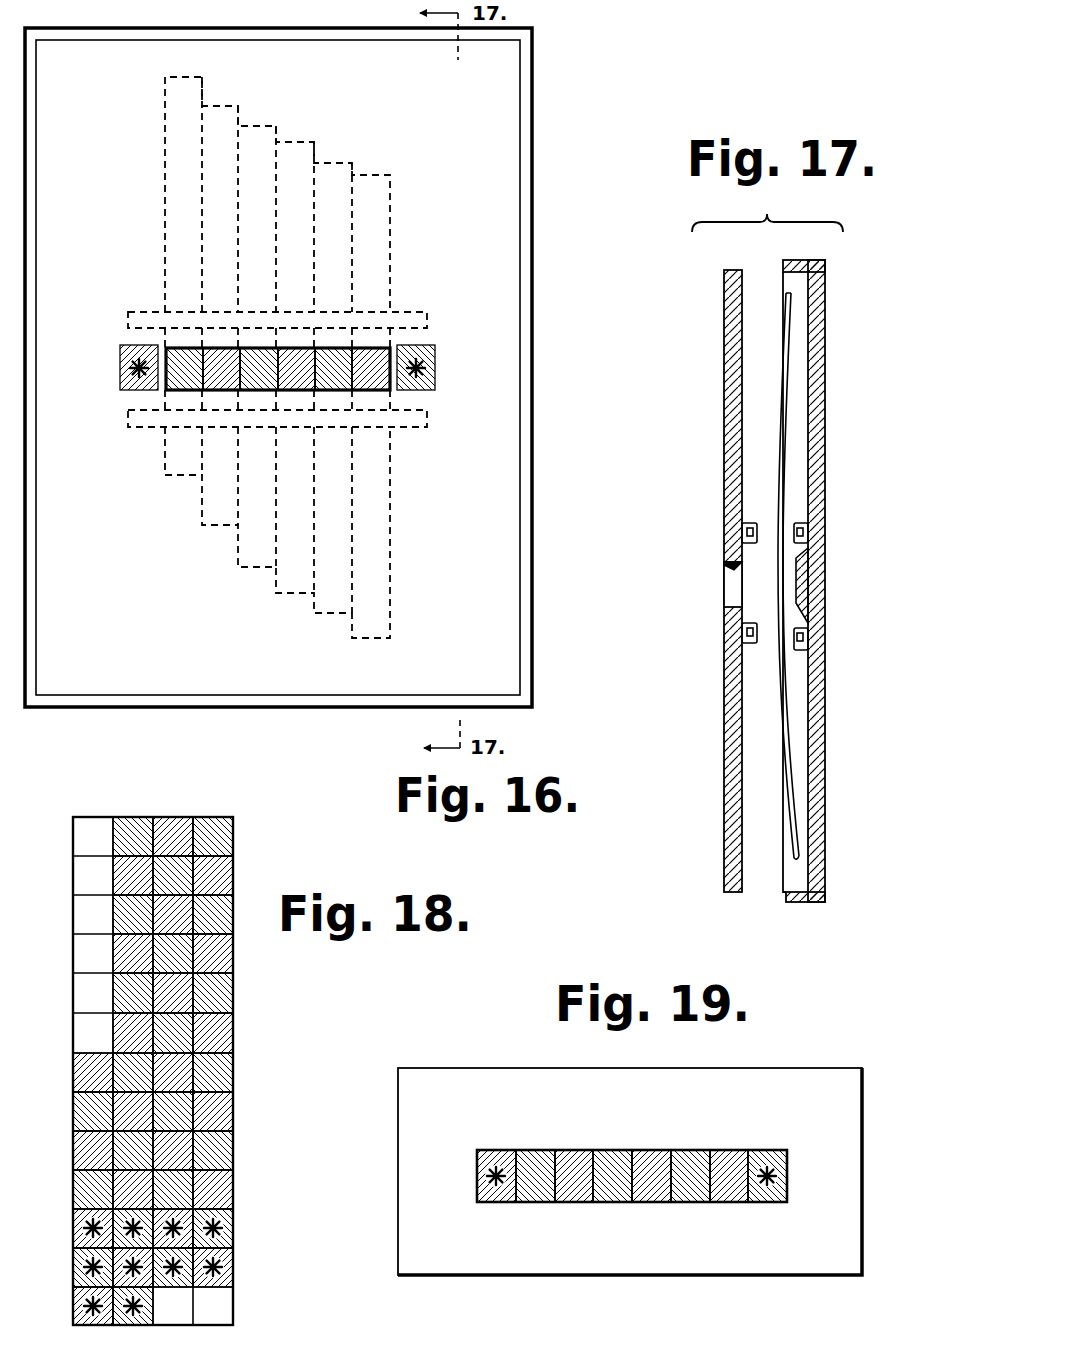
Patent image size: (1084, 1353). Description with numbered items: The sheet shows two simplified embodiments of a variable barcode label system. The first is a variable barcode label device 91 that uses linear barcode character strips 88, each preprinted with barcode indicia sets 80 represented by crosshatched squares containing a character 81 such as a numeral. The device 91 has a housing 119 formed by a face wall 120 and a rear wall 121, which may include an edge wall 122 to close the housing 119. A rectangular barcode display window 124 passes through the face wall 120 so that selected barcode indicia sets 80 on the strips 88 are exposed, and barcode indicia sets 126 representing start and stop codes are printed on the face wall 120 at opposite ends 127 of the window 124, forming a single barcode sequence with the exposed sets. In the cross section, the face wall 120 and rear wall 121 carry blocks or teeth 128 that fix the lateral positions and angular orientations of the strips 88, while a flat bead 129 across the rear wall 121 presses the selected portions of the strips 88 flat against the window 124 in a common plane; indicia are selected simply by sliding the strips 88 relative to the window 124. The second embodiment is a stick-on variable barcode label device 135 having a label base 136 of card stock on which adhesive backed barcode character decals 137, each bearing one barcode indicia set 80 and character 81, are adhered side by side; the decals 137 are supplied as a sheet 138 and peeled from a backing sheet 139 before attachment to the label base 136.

In FIG. 16, the barcode indicia set 80 is at (278, 368).
In FIG. 19, the barcode indicia set 80 is at (632, 1180).
In FIG. 16, the character 81 is at (259, 350).
In FIG. 19, the character 81 is at (683, 1203).
In FIG. 16, the barcode character strip 88 is at (338, 163).
In FIG. 17, the barcode character strip 88 is at (788, 371).
In FIG. 16, the variable barcode label device 91 is at (305, 354).
In FIG. 17, the variable barcode label device 91 is at (703, 581).
In FIG. 16, the housing 119 is at (304, 354).
In FIG. 16, the face wall 120 is at (509, 559).
In FIG. 17, the face wall 120 is at (703, 581).
In FIG. 17, the rear wall 121 is at (771, 584).
In FIG. 16, the edge wall 122 is at (99, 36).
In FIG. 17, the edge wall 122 is at (800, 260).
In FIG. 16, the barcode display window 124 is at (301, 368).
In FIG. 17, the barcode display window 124 is at (728, 565).
In FIG. 16, the start and stop barcode indicia sets 126 is at (120, 357).
In FIG. 16, the window ends 127 is at (277, 368).
In FIG. 17, the window ends 127 is at (728, 593).
In FIG. 17, the teeth 128 is at (745, 522).
In FIG. 17, the flat bead 129 is at (797, 600).
In FIG. 19, the stick-on variable barcode label device 135 is at (607, 1150).
In FIG. 19, the label base 136 is at (399, 1114).
In FIG. 18, the barcode character decal 137 is at (237, 1057).
In FIG. 19, the barcode character decal 137 is at (603, 1203).
In FIG. 18, the decal sheet 138 is at (165, 1071).
In FIG. 18, the backing sheet 139 is at (165, 1051).